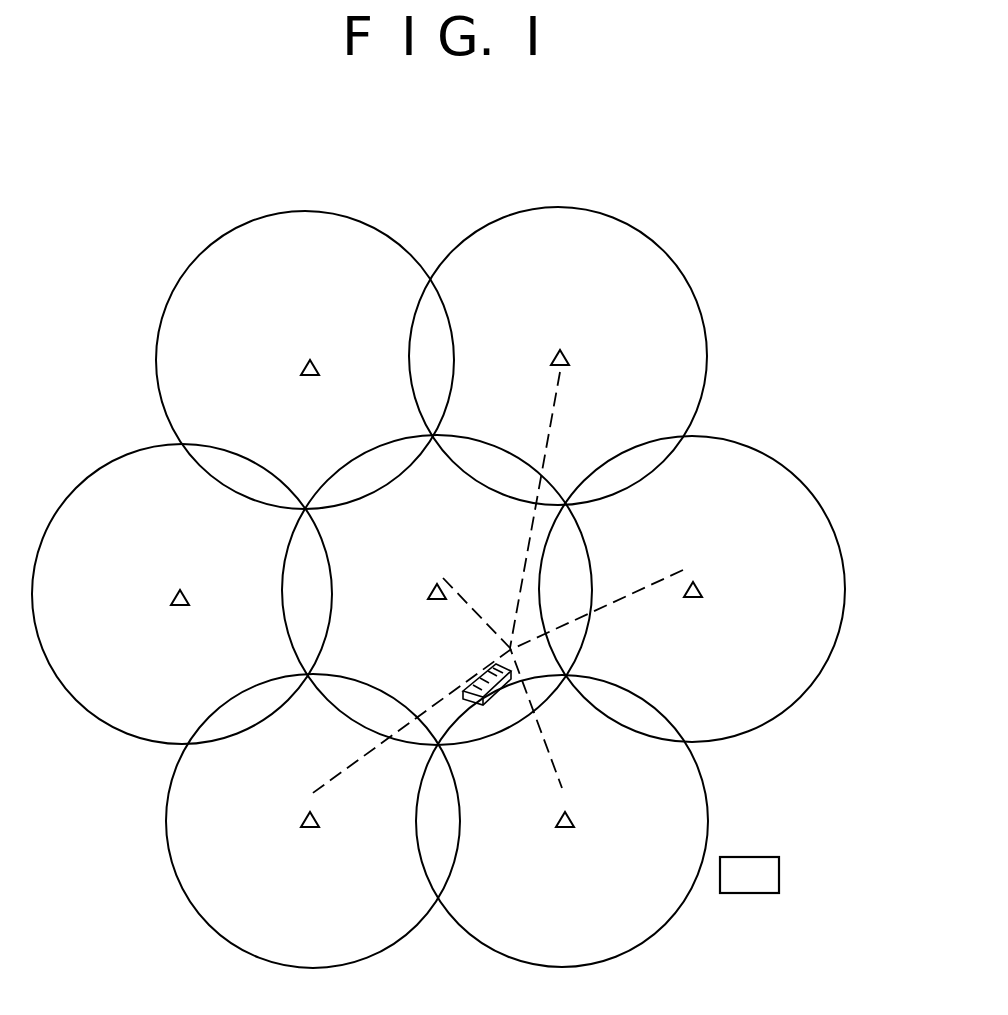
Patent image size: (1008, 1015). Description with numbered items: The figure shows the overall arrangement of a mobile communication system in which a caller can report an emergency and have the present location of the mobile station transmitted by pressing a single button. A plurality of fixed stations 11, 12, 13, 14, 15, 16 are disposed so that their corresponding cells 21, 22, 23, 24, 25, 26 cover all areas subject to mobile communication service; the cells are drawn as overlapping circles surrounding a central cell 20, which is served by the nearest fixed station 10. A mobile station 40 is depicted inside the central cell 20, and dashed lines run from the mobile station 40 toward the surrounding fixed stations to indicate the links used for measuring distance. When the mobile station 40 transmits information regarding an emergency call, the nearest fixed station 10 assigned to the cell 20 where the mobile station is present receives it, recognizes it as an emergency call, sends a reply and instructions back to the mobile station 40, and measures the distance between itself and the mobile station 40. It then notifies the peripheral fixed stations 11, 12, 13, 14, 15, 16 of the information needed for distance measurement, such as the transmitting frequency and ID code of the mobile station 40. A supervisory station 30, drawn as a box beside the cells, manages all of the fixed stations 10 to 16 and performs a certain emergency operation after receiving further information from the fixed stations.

The fixed station 10 is at (432, 587).
The fixed station 11 is at (570, 357).
The fixed station 12 is at (697, 598).
The fixed station 13 is at (568, 830).
The fixed station 14 is at (313, 830).
The fixed station 15 is at (187, 598).
The fixed station 16 is at (317, 365).
The cell 20 is at (590, 562).
The cell 21 is at (673, 260).
The cell 22 is at (806, 488).
The cell 23 is at (683, 905).
The cell 24 is at (195, 912).
The cell 25 is at (97, 725).
The cell 26 is at (240, 223).
The supervisory station 30 is at (767, 857).
The mobile station 40 is at (472, 675).